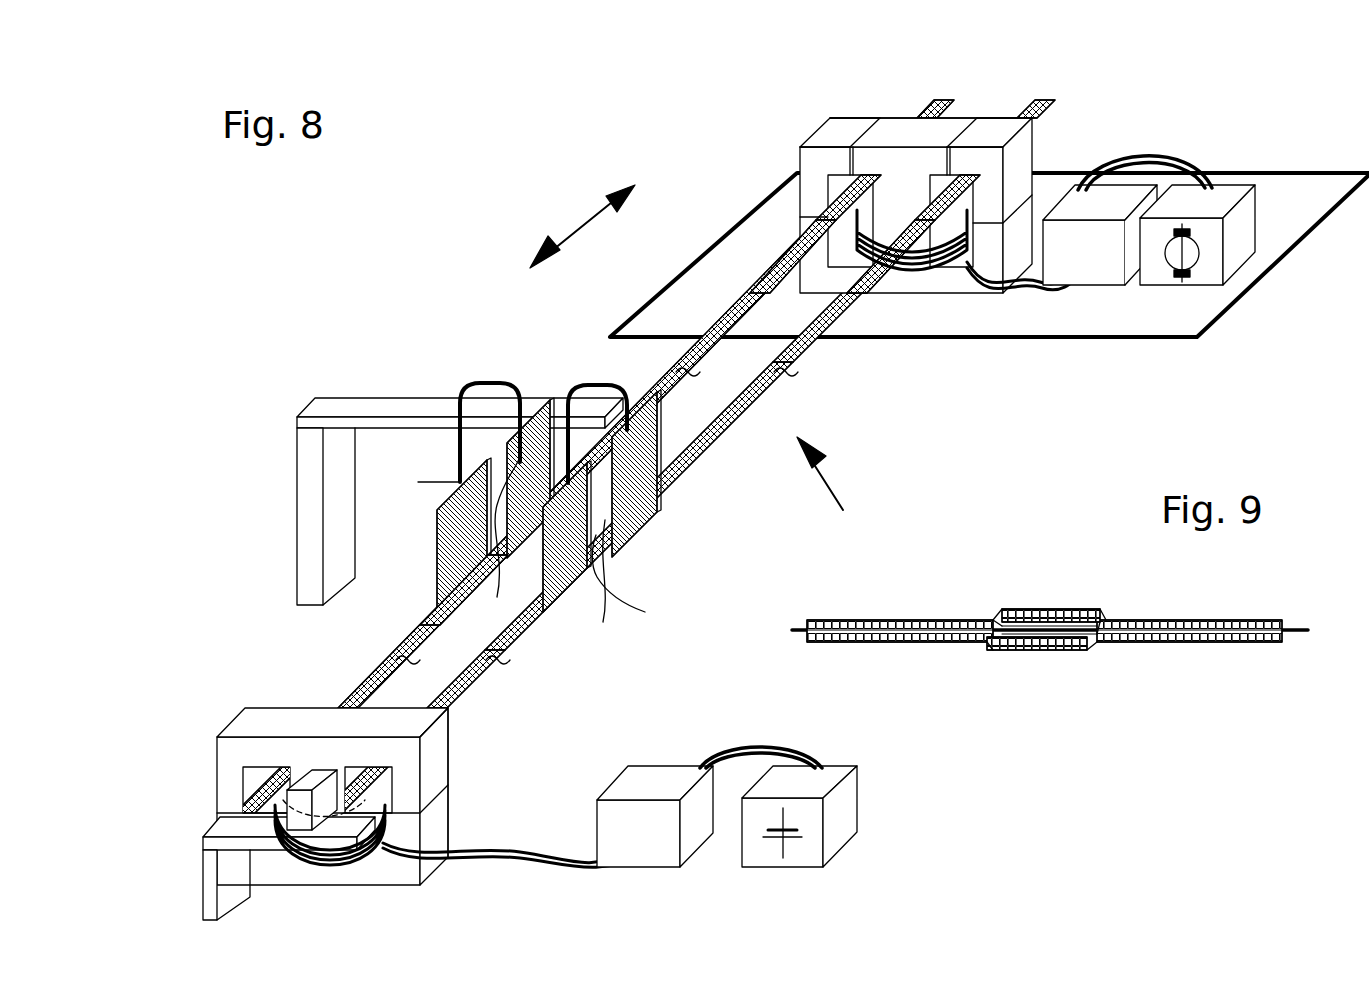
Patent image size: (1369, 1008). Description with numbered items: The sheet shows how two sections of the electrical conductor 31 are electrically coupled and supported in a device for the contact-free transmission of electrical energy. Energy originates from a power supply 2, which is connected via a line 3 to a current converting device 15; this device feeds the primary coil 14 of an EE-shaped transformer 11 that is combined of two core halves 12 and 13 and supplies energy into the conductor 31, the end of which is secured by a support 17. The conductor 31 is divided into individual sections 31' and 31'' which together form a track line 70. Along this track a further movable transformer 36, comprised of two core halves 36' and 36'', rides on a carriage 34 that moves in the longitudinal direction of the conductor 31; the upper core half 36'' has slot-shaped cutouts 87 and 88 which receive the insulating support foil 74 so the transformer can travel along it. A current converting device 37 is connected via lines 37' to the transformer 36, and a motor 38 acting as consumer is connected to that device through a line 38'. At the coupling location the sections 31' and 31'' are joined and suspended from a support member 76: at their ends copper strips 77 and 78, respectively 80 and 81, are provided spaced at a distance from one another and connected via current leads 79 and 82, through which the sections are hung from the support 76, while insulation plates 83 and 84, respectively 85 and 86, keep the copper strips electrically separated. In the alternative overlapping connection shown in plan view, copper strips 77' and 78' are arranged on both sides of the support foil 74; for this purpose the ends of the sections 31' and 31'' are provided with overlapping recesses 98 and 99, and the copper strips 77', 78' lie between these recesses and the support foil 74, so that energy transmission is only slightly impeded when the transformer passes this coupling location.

In FIG. 8, the power supply 2 is at (857, 793).
In FIG. 8, the line 3 is at (765, 750).
In FIG. 8, the transformer 11 is at (458, 780).
In FIG. 8, the core half 12 is at (437, 840).
In FIG. 8, the core half 13 is at (287, 727).
In FIG. 8, the primary coil 14 is at (343, 853).
In FIG. 8, the current converting device 15 is at (645, 768).
In FIG. 8, the support 17 is at (210, 833).
In FIG. 8, the electrical conductor 31 is at (594, 456).
In FIG. 8, the conductor section 31' is at (504, 696).
In FIG. 9, the conductor section 31' is at (900, 666).
In FIG. 8, the conductor section 31'' is at (914, 263).
In FIG. 9, the conductor section 31'' is at (1189, 666).
In FIG. 8, the carriage 34 is at (1240, 290).
In FIG. 8, the transformer 36 is at (851, 205).
In FIG. 8, the core half 36' is at (833, 242).
In FIG. 8, the upper core half 36'' is at (827, 114).
In FIG. 8, the current converting device 37 is at (1104, 186).
In FIG. 8, the lines 37' is at (1027, 323).
In FIG. 8, the motor 38 is at (1254, 235).
In FIG. 8, the line 38' is at (1196, 147).
In FIG. 8, the track line 70 is at (839, 498).
In FIG. 9, the support foil 74 is at (1306, 612).
In FIG. 8, the support member 76 is at (382, 388).
In FIG. 8, the copper strip 77 is at (568, 577).
In FIG. 9, the copper strip 77' is at (1010, 661).
In FIG. 8, the copper strip 78 is at (654, 491).
In FIG. 9, the copper strip 78' is at (1121, 658).
In FIG. 8, the current lead 79 is at (586, 398).
In FIG. 8, the copper strip 80 is at (457, 545).
In FIG. 8, the copper strip 81 is at (419, 480).
In FIG. 8, the current lead 82 is at (512, 372).
In FIG. 8, the insulation plate 83 is at (608, 628).
In FIG. 8, the insulation plate 84 is at (645, 612).
In FIG. 8, the insulation plate 85 is at (510, 525).
In FIG. 8, the insulation plate 86 is at (500, 600).
In FIG. 8, the slot-shaped cutout 87 is at (1040, 117).
In FIG. 8, the slot-shaped cutout 88 is at (860, 120).
In FIG. 9, the recess 98 is at (1063, 652).
In FIG. 9, the recess 99 is at (1062, 612).